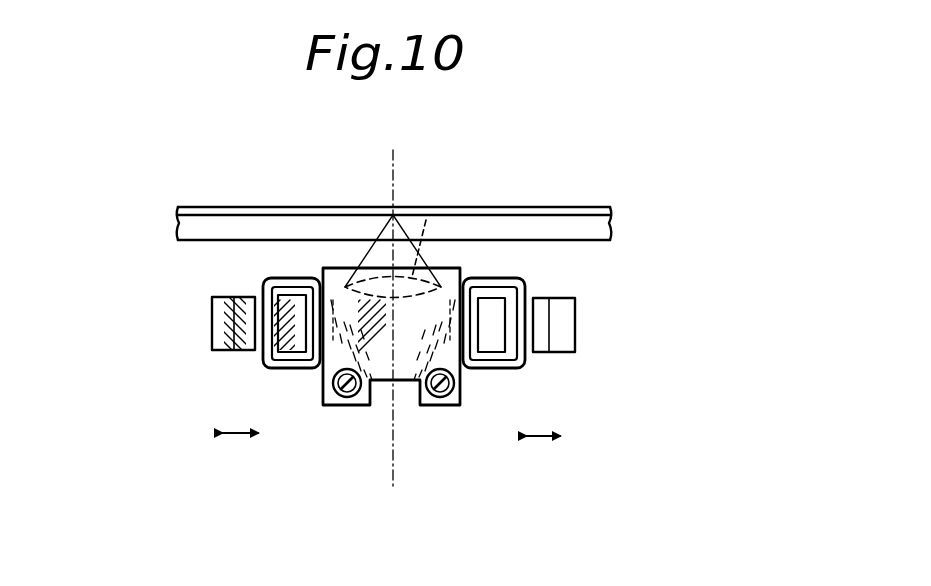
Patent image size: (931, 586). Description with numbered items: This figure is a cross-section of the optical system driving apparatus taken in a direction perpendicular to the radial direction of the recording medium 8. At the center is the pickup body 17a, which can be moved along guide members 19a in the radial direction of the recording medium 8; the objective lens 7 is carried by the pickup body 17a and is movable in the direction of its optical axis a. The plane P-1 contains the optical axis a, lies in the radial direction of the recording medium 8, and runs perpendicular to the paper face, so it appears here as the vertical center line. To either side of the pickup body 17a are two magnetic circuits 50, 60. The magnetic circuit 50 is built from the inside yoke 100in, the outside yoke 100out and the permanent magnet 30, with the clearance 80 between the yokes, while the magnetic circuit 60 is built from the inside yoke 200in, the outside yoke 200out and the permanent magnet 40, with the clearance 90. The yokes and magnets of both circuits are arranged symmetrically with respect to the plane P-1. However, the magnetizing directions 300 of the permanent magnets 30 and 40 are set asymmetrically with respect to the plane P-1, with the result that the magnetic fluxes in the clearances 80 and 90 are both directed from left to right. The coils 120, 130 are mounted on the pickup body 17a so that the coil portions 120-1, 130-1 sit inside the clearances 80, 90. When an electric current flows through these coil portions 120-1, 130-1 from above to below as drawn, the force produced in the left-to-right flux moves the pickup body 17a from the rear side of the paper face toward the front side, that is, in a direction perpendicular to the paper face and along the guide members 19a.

The recording medium 8 is at (233, 211).
The portion of coil 120-1 is at (262, 305).
The coil 120 is at (300, 278).
The objective lens 7 is at (426, 214).
The pickup body 17a is at (444, 274).
The coil 130 is at (493, 278).
The portion of coil 130-1 is at (525, 305).
The magnetic circuit 50 is at (208, 283).
The magnetic circuit 60 is at (588, 294).
The outside yoke 100out is at (214, 313).
The outside yoke 200out is at (577, 317).
The permanent magnet 30 is at (214, 337).
The permanent magnet 40 is at (577, 342).
The clearance 80 is at (258, 354).
The clearance 90 is at (527, 342).
The inside yoke 100in is at (291, 346).
The inside yoke 200in is at (496, 345).
The guide member 19a is at (345, 405).
The magnetizing direction 300 is at (240, 434).
The plane P-1 is at (397, 452).
The optical axis a is at (394, 167).